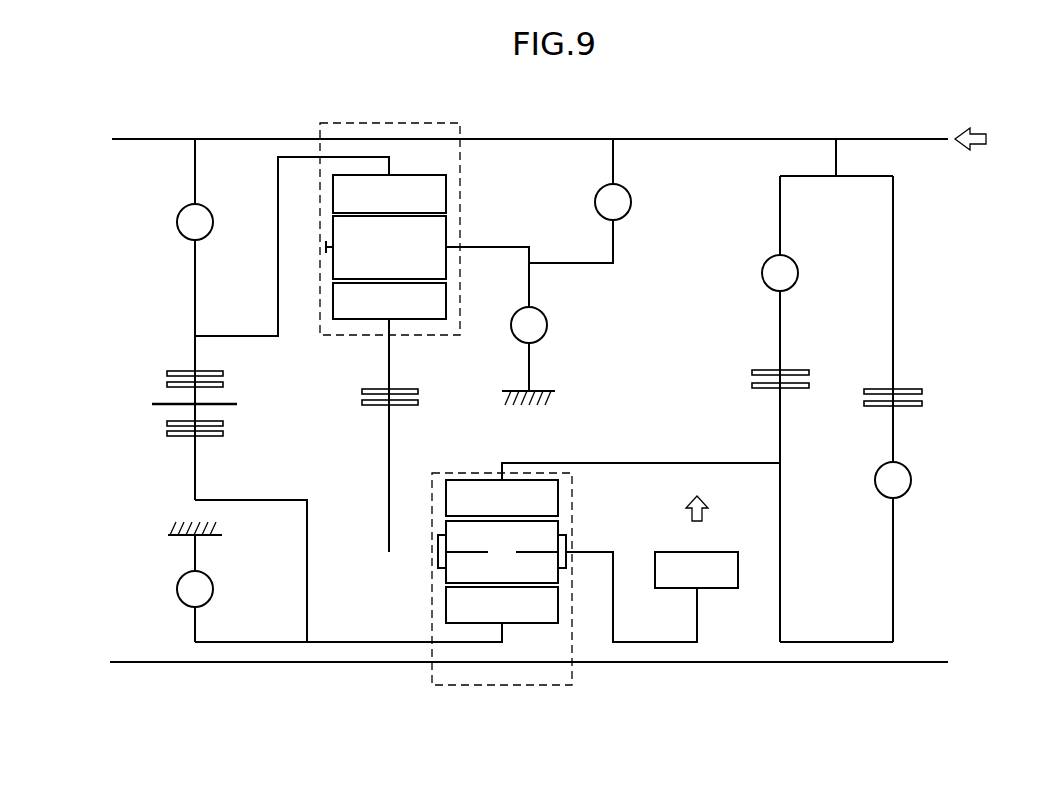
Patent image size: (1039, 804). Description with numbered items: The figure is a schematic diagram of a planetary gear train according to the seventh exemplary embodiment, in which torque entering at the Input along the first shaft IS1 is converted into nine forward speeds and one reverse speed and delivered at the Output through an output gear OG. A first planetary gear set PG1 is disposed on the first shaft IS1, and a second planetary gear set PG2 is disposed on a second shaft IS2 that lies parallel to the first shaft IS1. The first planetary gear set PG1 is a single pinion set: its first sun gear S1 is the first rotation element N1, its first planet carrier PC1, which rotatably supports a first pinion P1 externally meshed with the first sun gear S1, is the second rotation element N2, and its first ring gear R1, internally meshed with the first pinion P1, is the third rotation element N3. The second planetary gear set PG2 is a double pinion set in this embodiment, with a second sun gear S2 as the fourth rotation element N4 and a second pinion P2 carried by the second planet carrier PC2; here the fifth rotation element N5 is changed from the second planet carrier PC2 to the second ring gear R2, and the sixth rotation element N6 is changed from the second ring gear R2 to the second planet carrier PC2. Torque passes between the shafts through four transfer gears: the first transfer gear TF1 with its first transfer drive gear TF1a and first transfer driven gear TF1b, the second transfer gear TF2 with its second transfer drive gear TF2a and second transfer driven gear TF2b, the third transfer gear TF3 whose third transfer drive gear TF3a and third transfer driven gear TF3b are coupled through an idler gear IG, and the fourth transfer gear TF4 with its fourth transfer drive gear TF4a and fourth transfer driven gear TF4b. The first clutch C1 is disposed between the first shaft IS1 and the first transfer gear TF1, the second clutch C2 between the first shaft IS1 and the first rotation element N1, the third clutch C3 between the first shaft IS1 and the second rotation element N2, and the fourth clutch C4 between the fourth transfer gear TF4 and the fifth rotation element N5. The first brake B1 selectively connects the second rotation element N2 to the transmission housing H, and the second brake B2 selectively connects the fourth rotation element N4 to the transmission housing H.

The first shaft IS1 is at (726, 139).
The second shaft IS2 is at (745, 663).
The input (engine torque input) Input is at (991, 140).
The output Output is at (698, 521).
The output gear OG is at (696, 570).
The first planetary gear set PG1 is at (390, 307).
The second planetary gear set PG2 is at (606, 592).
The first rotation element N1 is at (389, 194).
The first sun gear S1 is at (389, 194).
The second rotation element N2 is at (529, 251).
The first planet carrier PC1 is at (490, 246).
The third rotation element N3 is at (389, 417).
The first ring gear R1 is at (389, 417).
The first pinion P1 is at (386, 247).
The fourth rotation element N4 is at (502, 605).
The second sun gear S2 is at (502, 605).
The fifth rotation element N5 is at (613, 489).
The second ring gear R2 is at (613, 489).
The sixth rotation element N6 is at (631, 571).
The second planet carrier PC2 is at (568, 541).
The second pinion P2 is at (502, 552).
The first clutch C1 is at (780, 409).
The second clutch C2 is at (195, 319).
The third clutch C3 is at (613, 179).
The fourth clutch C4 is at (893, 409).
The first brake B1 is at (529, 349).
The second brake B2 is at (195, 588).
The transmission housing H is at (170, 527).
The first transfer gear TF1 is at (725, 378).
The first transfer drive gear TF1a is at (752, 372).
The first transfer driven gear TF1b is at (752, 386).
The second transfer gear TF2 is at (333, 396).
The second transfer drive gear TF2a is at (362, 392).
The second transfer driven gear TF2b is at (362, 403).
The third transfer gear TF3 is at (137, 403).
The third transfer drive gear TF3a is at (167, 374).
The third transfer driven gear TF3b is at (155, 437).
The idler gear IG is at (195, 400).
The fourth transfer gear TF4 is at (951, 400).
The fourth transfer drive gear TF4a is at (922, 392).
The fourth transfer driven gear TF4b is at (922, 404).